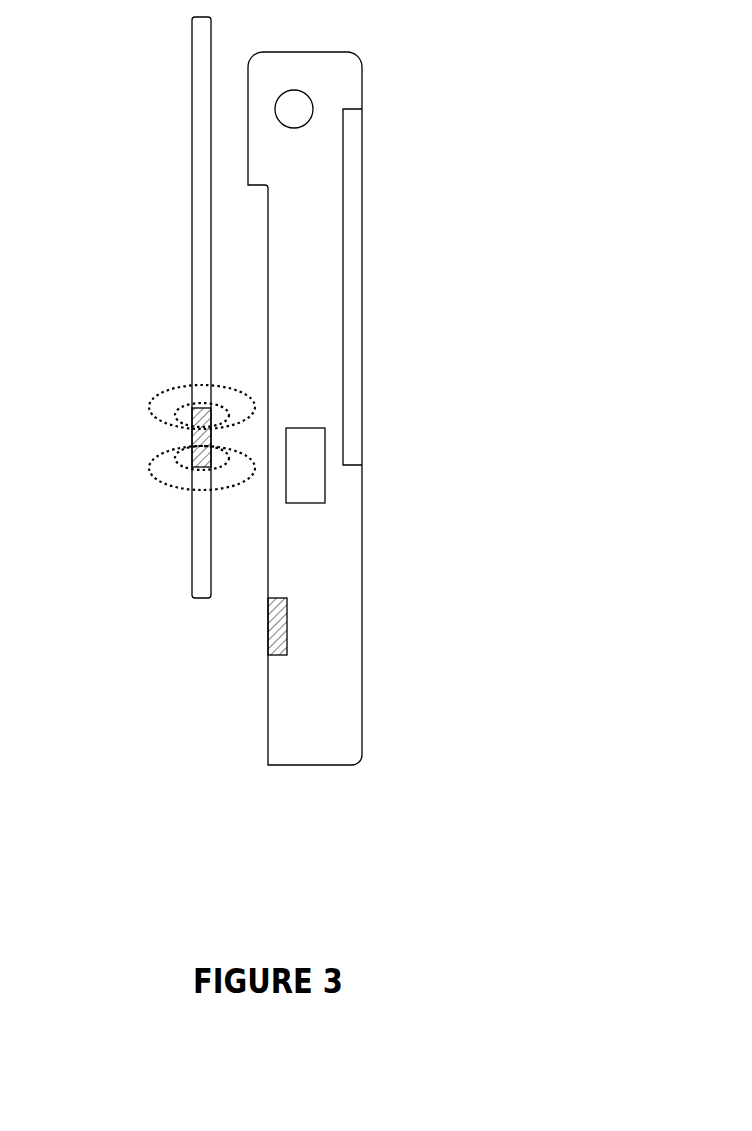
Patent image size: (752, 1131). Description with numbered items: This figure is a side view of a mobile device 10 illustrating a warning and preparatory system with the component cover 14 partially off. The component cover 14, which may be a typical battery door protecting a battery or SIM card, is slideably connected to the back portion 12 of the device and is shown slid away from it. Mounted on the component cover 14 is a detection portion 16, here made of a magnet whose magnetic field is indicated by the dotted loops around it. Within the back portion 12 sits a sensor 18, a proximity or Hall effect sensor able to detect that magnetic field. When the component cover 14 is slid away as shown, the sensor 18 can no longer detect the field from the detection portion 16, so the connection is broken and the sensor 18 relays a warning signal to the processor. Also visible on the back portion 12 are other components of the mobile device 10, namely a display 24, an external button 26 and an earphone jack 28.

The mobile device 10 is at (325, 471).
The back portion 12 is at (268, 708).
The component cover 14 is at (148, 307).
The detection portion 16 is at (198, 444).
The sensor 18 is at (268, 633).
The display 24 is at (362, 353).
The external button 26 is at (326, 488).
The earphone jack 28 is at (304, 108).